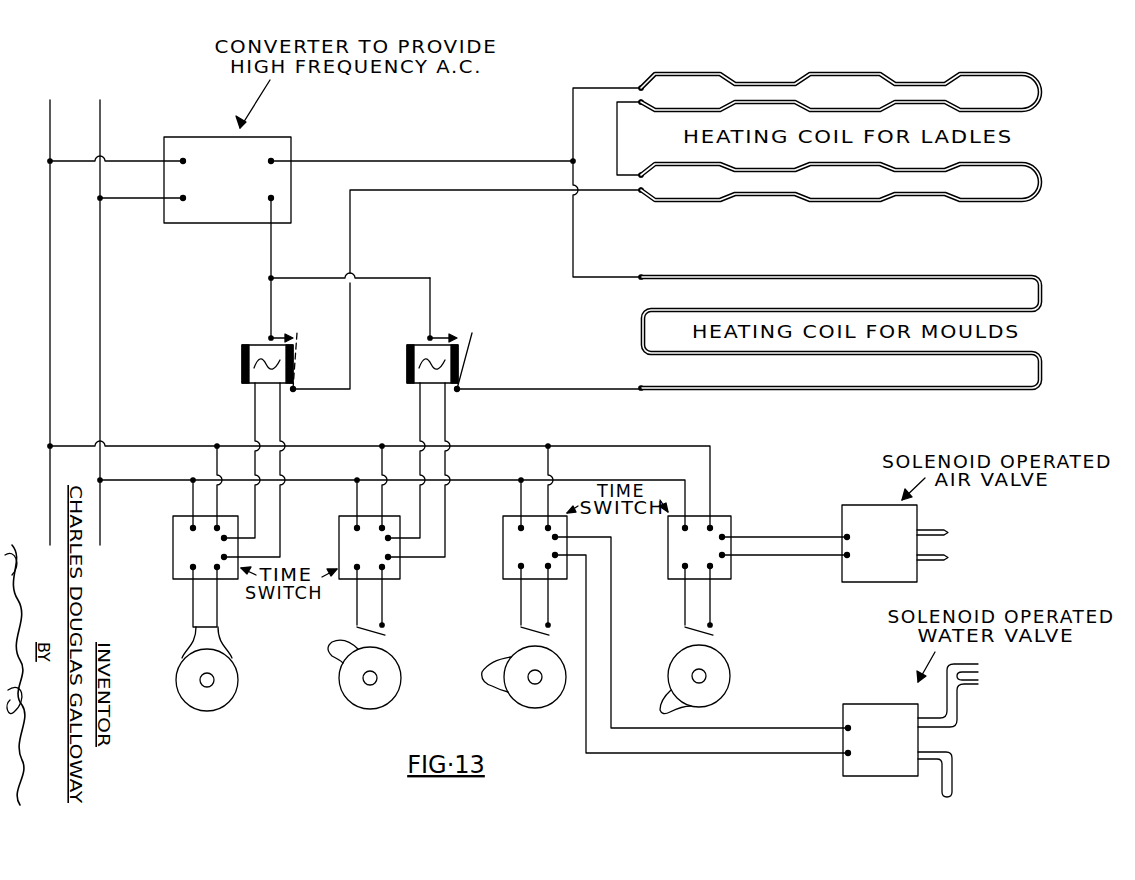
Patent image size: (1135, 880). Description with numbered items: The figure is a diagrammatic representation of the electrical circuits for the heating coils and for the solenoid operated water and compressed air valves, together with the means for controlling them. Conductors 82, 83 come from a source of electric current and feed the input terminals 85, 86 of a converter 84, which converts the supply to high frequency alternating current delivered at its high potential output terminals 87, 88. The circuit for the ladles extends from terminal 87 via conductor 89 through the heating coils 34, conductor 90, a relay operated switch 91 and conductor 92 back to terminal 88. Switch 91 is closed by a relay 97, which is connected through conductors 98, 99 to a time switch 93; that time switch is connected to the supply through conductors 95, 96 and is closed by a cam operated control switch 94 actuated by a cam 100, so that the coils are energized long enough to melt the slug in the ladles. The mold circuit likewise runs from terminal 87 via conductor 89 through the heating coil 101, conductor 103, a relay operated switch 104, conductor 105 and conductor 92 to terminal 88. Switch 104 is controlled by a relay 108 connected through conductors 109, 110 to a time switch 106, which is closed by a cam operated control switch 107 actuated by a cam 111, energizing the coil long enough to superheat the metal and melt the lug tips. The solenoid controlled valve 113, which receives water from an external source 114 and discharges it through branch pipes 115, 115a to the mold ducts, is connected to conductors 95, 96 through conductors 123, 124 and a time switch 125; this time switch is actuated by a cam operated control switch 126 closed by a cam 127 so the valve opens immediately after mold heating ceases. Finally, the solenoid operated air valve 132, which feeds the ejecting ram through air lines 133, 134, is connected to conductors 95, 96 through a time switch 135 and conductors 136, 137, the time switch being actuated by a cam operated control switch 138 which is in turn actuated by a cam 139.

The heating coils 34 is at (1037, 86).
The conductor 82 is at (50, 264).
The conductor 83 is at (102, 318).
The converter 84 is at (227, 180).
The input terminal 85 is at (183, 158).
The input terminal 86 is at (183, 201).
The output terminal 87 is at (272, 158).
The output terminal 88 is at (274, 200).
The conductor 89 is at (428, 161).
The conductor 90 is at (473, 190).
The relay operated switch 91 is at (303, 350).
The conductor 92 is at (271, 253).
The time switch 93 is at (205, 511).
The cam operated control switch 94 is at (193, 623).
The conductor 95 is at (118, 446).
The conductor 96 is at (146, 480).
The relay 97 is at (242, 356).
The conductor 98 is at (252, 404).
The conductor 99 is at (281, 430).
The cam 100 is at (231, 706).
The heating coil 101 is at (1042, 290).
The conductor 103 is at (545, 390).
The relay operated switch 104 is at (471, 354).
The conductor 105 is at (432, 303).
The time switch 106 is at (369, 511).
The cam operated control switch 107 is at (359, 628).
The relay 108 is at (412, 382).
The conductor 109 is at (418, 421).
The conductor 110 is at (447, 429).
The cam 111 is at (393, 706).
The solenoid controlled valve 113 is at (880, 740).
The external source 114 is at (955, 786).
The branch pipe 115 is at (982, 667).
The branch pipe 115a is at (982, 688).
The conductor 123 is at (758, 754).
The conductor 124 is at (758, 729).
The time switch 125 is at (535, 511).
The cam operated control switch 126 is at (522, 628).
The cam 127 is at (557, 705).
The solenoid operated air valve 132 is at (879, 543).
The air line 133 is at (950, 531).
The air line 134 is at (950, 557).
The time switch 135 is at (699, 547).
The conductor 136 is at (806, 556).
The conductor 137 is at (806, 537).
The cam operated control switch 138 is at (685, 628).
The cam 139 is at (731, 679).